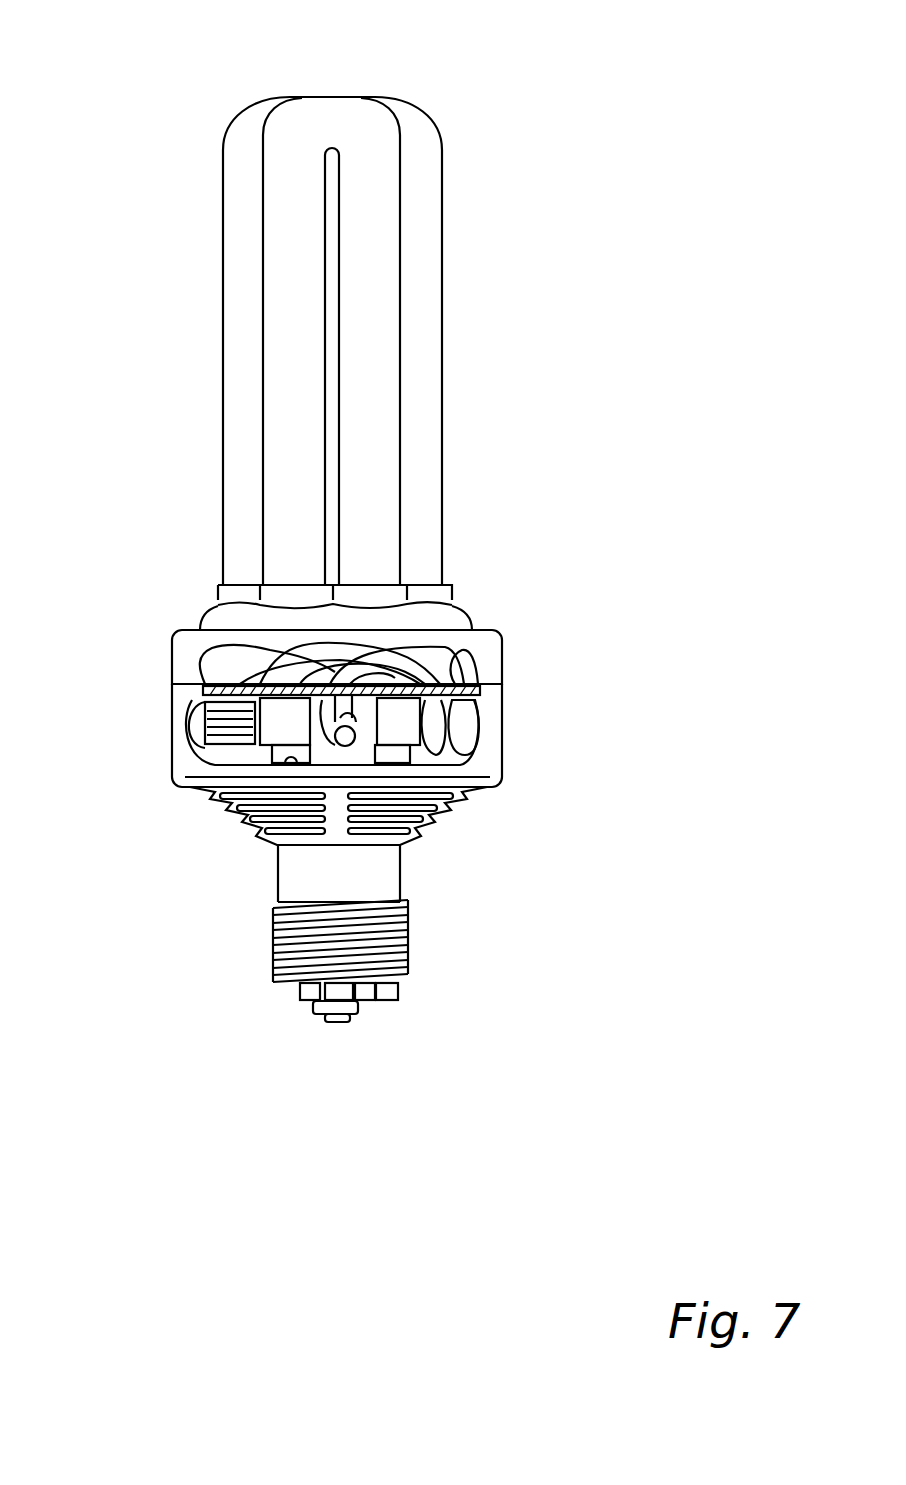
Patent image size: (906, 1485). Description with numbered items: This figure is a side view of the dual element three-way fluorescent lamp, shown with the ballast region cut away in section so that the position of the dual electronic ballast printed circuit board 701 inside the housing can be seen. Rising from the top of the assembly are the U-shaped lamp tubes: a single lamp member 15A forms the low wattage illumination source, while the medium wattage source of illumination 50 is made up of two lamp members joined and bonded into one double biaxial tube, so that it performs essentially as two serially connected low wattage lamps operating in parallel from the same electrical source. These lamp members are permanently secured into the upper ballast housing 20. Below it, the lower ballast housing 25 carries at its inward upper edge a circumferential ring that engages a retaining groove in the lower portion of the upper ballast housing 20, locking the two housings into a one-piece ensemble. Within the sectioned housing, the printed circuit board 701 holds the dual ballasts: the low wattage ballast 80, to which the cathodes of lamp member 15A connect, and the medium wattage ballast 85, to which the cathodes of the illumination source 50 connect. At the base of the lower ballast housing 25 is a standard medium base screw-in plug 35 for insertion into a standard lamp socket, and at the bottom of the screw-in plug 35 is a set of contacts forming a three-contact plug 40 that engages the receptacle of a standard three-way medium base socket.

The lamp member 15A is at (335, 88).
The medium wattage source of illumination 50 is at (443, 295).
The upper ballast housing 20 is at (170, 632).
The lower ballast housing 25 is at (168, 728).
The low wattage ballast 80 is at (450, 653).
The medium wattage ballast 85 is at (417, 622).
The dual electronic ballast printed circuit board 701 is at (482, 695).
The medium base screw-in plug 35 is at (275, 863).
The 3-contact plug 40 is at (300, 998).